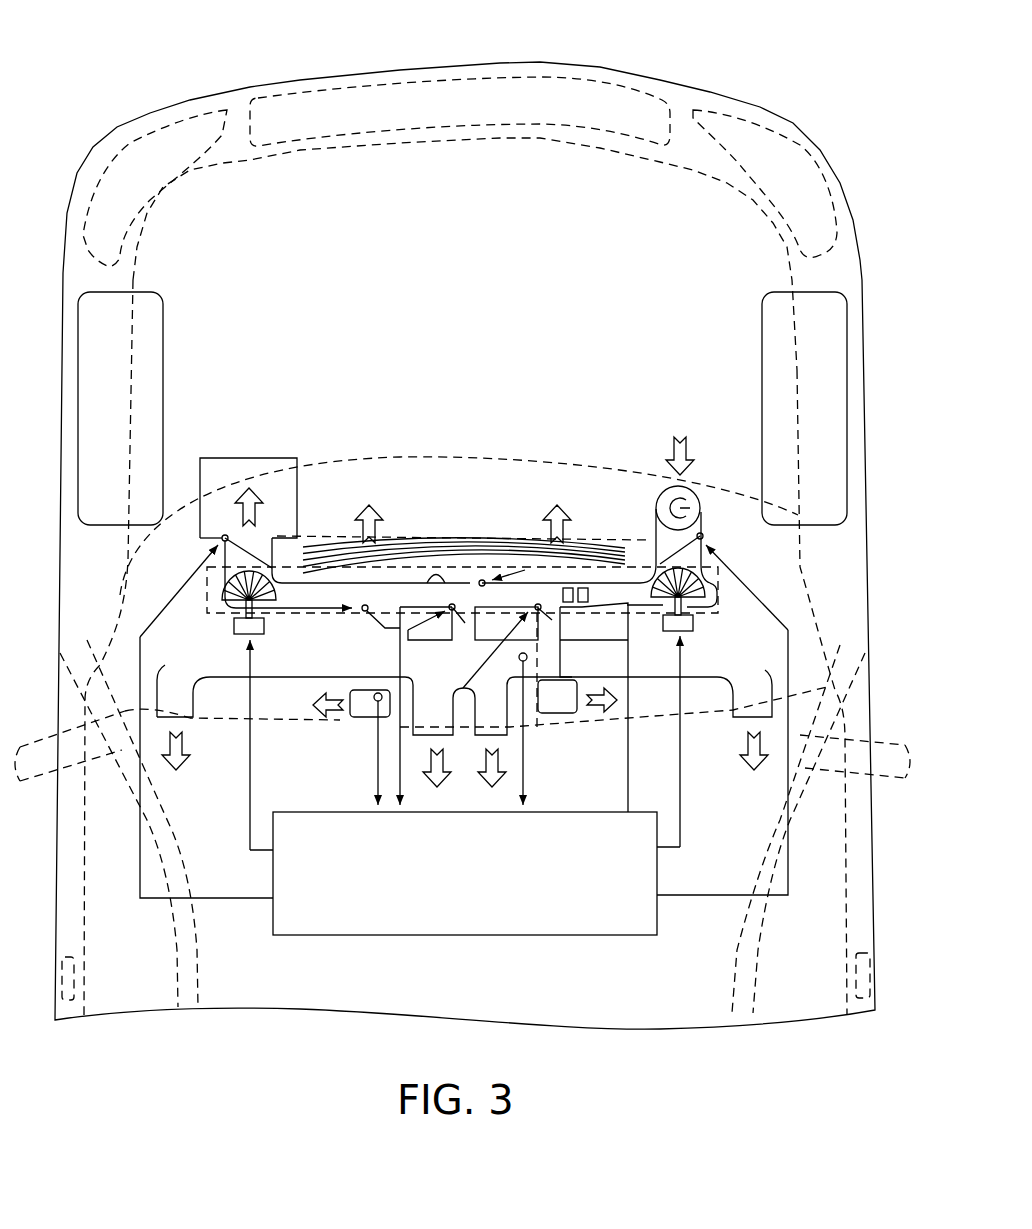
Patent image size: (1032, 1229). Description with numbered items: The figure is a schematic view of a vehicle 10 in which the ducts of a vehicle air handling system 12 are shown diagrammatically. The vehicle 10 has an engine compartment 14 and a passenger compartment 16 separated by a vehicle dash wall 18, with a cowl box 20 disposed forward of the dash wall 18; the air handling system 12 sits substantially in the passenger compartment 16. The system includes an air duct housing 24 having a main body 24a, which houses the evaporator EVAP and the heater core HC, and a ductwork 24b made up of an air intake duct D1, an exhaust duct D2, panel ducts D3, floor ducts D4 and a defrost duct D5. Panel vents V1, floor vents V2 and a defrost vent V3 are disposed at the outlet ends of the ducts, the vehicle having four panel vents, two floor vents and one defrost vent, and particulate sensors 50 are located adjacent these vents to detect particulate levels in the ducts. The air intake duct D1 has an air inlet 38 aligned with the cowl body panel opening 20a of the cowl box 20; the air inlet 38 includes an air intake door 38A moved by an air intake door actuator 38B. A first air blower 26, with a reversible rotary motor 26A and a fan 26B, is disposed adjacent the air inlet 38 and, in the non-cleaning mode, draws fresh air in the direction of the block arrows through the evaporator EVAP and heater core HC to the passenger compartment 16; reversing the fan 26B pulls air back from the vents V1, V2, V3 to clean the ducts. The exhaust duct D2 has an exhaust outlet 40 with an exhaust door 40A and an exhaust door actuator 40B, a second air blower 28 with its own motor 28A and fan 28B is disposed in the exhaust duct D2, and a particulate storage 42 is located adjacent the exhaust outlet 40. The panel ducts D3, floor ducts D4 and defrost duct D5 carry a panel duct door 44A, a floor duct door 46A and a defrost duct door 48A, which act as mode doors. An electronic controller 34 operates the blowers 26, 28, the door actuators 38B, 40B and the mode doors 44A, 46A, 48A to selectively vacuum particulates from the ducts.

The vehicle 10 is at (708, 42).
The vehicle air handling system 12 is at (573, 402).
The engine compartment 14 is at (471, 304).
The passenger compartment 16 is at (654, 992).
The vehicle dash wall 18 is at (122, 598).
The cowl box 20 is at (400, 460).
The cowl body panel opening 20a is at (710, 488).
The air duct housing 24 is at (830, 543).
The main body 24a is at (735, 570).
The ductwork 24b is at (783, 671).
The first air blower 26 is at (775, 647).
The reversible rotary motor 26A is at (694, 630).
The fan 26B is at (713, 586).
The second air blower 28 is at (182, 682).
The reversible rotary motor 28A is at (249, 645).
The fan 28B is at (222, 588).
The electronic controller 34 is at (393, 935).
The air inlet 38 is at (697, 490).
The air intake door 38A is at (663, 555).
The air intake door actuator 38B is at (703, 538).
The exhaust outlet 40 is at (253, 540).
The exhaust door 40A is at (232, 525).
The exhaust door actuator 40B is at (222, 537).
The particulate storage 42 is at (300, 496).
The panel duct door 44A is at (450, 618).
The floor duct door 46A is at (395, 568).
The defrost duct door 48A is at (482, 576).
The particulate sensors 50 is at (431, 567).
The air intake duct D1 is at (704, 512).
The exhaust duct D2 is at (275, 552).
The panel ducts D3 is at (193, 702).
The floor ducts D4 is at (363, 717).
The defrost duct D5 is at (460, 572).
The panel vent V1 is at (165, 717).
The floor vent V2 is at (345, 717).
The defrost vent V3 is at (513, 540).
The evaporator EVAP is at (580, 588).
The heater core HC is at (566, 608).